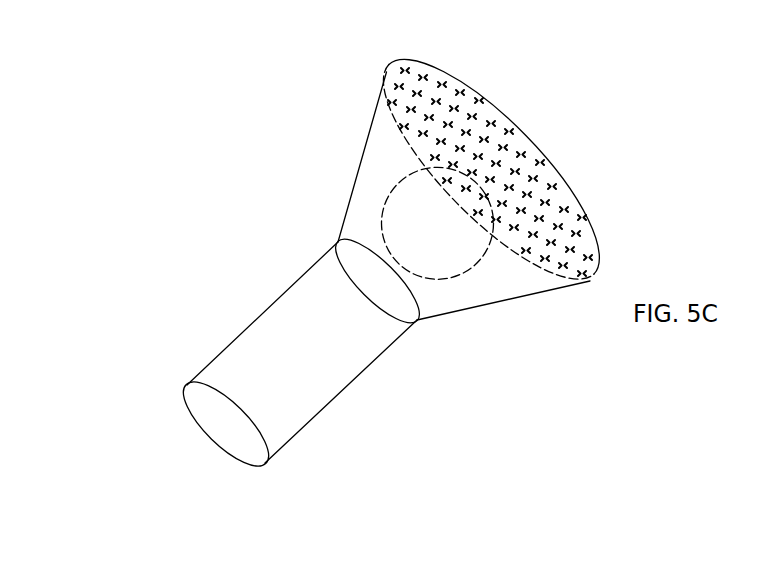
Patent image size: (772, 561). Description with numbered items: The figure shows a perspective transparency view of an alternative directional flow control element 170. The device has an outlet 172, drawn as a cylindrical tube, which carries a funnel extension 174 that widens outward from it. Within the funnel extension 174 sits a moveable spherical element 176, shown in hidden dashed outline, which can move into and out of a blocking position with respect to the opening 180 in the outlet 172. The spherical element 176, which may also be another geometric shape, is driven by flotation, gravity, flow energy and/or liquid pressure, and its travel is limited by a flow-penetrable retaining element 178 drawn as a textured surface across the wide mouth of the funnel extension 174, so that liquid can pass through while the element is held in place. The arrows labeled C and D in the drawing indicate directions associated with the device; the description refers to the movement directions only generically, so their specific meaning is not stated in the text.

The flow control element 170 is at (367, 272).
The outlet 172 is at (280, 357).
The funnel extension 174 is at (437, 236).
The moveable spherical element 176 is at (480, 282).
The flow-penetrable retaining element 178 is at (546, 184).
The opening 180 is at (383, 321).
The direction C arrow C is at (583, 103).
The direction D arrow D is at (177, 478).